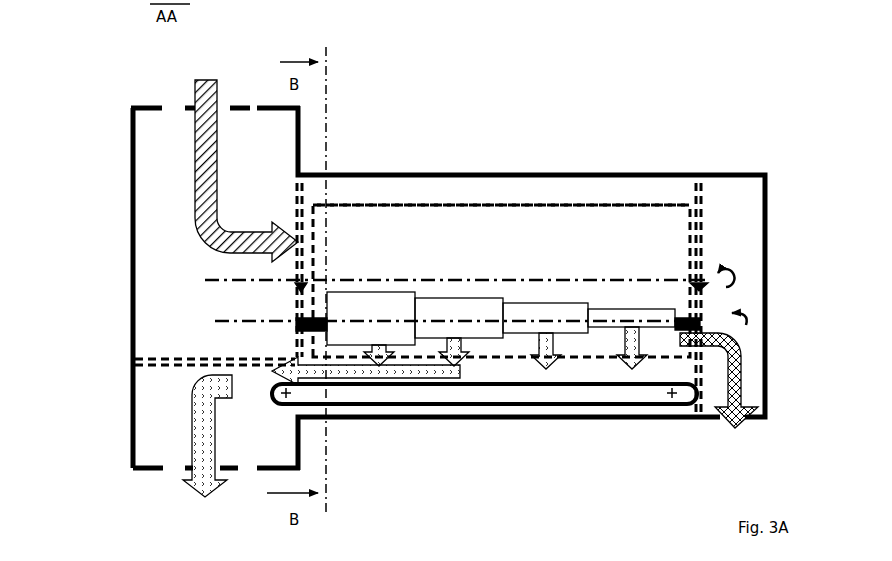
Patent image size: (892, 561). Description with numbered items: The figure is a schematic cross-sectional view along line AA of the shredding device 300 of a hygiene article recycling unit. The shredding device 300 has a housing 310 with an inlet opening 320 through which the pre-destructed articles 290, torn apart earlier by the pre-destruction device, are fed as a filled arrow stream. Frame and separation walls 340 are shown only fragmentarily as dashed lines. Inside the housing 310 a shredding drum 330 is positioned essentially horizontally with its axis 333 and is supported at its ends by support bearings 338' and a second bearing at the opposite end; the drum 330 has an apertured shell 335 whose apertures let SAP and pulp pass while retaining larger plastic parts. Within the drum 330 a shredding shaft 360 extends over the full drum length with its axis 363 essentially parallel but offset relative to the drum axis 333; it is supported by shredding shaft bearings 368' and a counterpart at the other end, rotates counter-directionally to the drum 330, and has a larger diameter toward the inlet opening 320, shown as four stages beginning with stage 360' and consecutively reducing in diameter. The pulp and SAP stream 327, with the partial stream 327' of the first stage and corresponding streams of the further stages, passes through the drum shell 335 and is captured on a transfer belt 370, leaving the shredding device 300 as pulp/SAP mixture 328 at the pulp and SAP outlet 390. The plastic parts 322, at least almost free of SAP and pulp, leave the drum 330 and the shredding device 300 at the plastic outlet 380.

The pre-destructed articles 290 is at (203, 143).
The shredding device 300 is at (78, 267).
The housing 310 is at (129, 213).
The inlet opening 320 is at (170, 108).
The plastic parts 322 is at (742, 380).
The pulp and SAP stream 327 is at (366, 420).
The pulp and SAP stream of the first stage 327' is at (381, 425).
The pulp/SAP mixture 328 is at (196, 440).
The shredding drum 330 is at (484, 204).
The axis of the shredding drum 333 is at (650, 276).
The apertured shell 335 is at (414, 204).
The first support bearing 338' is at (170, 304).
The frame and separation walls 340 is at (173, 363).
The shredding shaft 360 is at (739, 292).
The first shredding shaft stage 360' is at (376, 388).
The axis of the shredding shaft 363 is at (223, 322).
The first shredding shaft bearing 368' is at (180, 343).
The transfer belt 370 is at (677, 396).
The plastic outlet 380 is at (752, 421).
The pulp and SAP outlet 390 is at (176, 470).